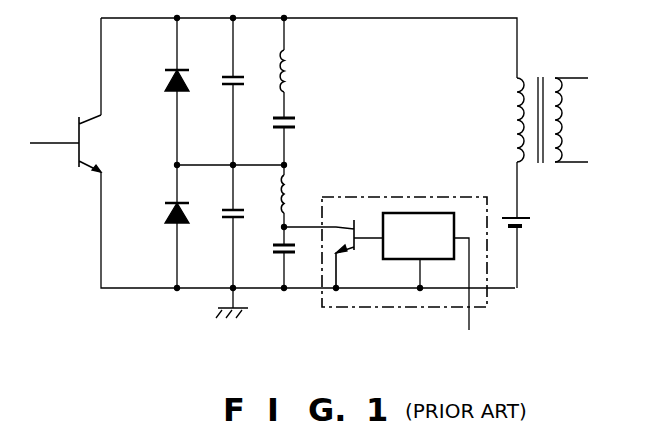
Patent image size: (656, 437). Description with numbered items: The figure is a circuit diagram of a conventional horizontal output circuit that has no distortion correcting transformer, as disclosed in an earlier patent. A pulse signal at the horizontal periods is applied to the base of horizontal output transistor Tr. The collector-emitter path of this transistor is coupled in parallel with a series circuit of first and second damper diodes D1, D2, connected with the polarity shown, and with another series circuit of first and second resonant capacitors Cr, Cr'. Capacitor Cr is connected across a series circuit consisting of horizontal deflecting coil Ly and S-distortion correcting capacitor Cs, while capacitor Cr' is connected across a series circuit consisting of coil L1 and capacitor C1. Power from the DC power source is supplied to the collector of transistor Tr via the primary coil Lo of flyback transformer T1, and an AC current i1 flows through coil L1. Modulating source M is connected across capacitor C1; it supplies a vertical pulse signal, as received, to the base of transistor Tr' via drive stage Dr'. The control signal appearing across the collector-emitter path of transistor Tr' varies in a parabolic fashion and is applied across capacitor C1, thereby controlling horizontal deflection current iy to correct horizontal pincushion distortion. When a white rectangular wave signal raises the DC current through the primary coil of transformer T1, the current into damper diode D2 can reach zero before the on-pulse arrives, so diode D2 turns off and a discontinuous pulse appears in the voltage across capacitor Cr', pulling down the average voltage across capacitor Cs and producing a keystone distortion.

The horizontal output transistor Tr is at (65, 156).
The first damper diode D1 is at (164, 153).
The second damper diode D2 is at (161, 214).
The first resonant capacitor Cr is at (247, 91).
The second resonant capacitor Cr' is at (248, 226).
The horizontal deflecting coil Ly is at (290, 84).
The horizontal deflection current iy is at (300, 47).
The S-distortion correcting capacitor Cs is at (299, 139).
The coil L1 is at (292, 204).
The AC current through coil L1 i1 is at (300, 167).
The capacitor C1 is at (299, 266).
The modulating source M is at (448, 197).
The transistor Tr' is at (333, 254).
The drive stage Dr' is at (426, 271).
The primary coil Lo is at (502, 183).
The flyback transformer T1 is at (561, 106).